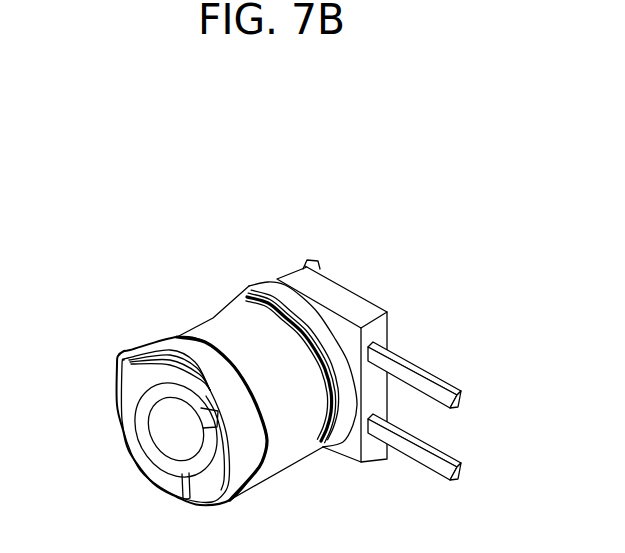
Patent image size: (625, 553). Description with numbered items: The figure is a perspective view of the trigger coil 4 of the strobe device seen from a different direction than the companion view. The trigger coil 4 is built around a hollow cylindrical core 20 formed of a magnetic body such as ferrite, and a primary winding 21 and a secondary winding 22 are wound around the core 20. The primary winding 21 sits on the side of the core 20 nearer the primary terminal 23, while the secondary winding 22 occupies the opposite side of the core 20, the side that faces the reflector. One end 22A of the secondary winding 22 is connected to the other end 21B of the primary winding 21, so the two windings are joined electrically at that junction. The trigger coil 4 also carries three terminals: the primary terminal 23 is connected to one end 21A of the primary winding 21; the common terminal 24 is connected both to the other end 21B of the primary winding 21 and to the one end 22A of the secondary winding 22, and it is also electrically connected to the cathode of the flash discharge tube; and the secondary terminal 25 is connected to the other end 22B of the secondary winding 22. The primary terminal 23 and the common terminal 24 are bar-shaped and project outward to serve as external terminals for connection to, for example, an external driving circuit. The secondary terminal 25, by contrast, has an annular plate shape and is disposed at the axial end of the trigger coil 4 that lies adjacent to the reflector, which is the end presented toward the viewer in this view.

The trigger coil 4 is at (74, 194).
The core 20 is at (163, 423).
The primary winding 21 is at (273, 289).
The one end of primary winding 21A is at (296, 289).
The other end of primary winding 21B is at (293, 316).
The secondary winding 22 is at (213, 332).
The one end of secondary winding 22A is at (241, 294).
The other end of secondary winding 22B is at (177, 336).
The primary terminal 23 is at (460, 393).
The common terminal 24 is at (460, 465).
The secondary terminal 25 is at (206, 483).